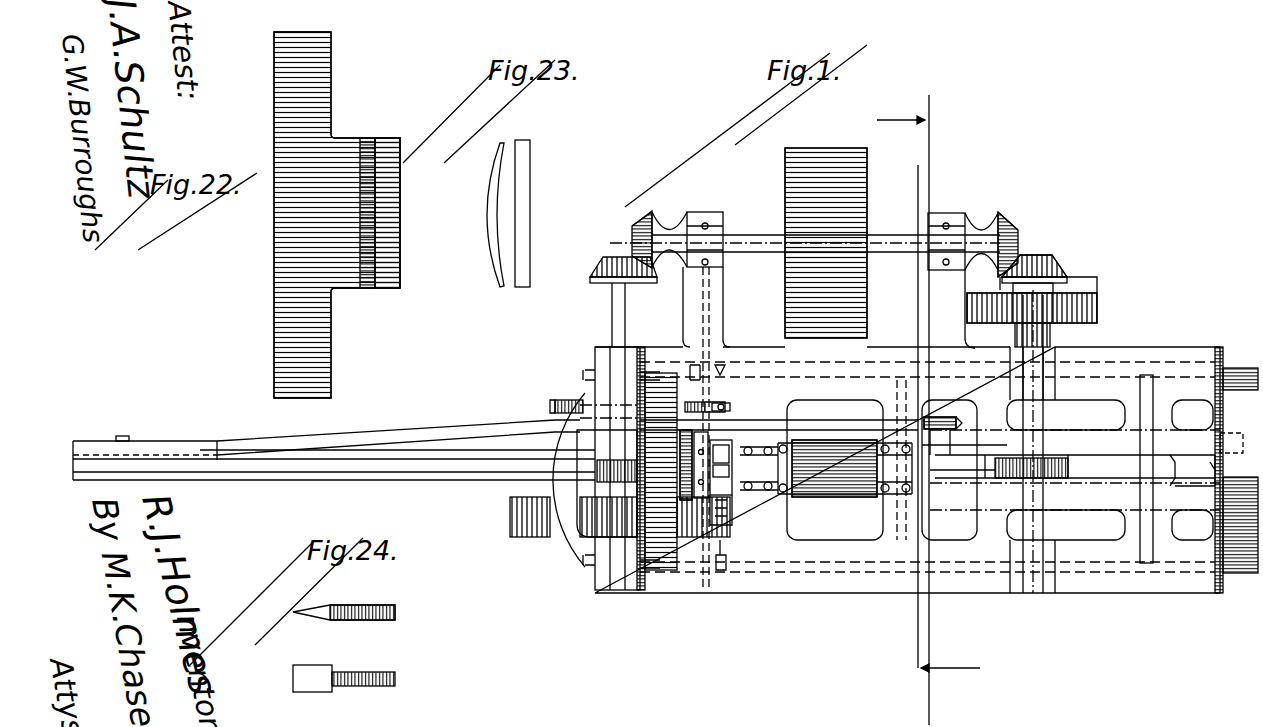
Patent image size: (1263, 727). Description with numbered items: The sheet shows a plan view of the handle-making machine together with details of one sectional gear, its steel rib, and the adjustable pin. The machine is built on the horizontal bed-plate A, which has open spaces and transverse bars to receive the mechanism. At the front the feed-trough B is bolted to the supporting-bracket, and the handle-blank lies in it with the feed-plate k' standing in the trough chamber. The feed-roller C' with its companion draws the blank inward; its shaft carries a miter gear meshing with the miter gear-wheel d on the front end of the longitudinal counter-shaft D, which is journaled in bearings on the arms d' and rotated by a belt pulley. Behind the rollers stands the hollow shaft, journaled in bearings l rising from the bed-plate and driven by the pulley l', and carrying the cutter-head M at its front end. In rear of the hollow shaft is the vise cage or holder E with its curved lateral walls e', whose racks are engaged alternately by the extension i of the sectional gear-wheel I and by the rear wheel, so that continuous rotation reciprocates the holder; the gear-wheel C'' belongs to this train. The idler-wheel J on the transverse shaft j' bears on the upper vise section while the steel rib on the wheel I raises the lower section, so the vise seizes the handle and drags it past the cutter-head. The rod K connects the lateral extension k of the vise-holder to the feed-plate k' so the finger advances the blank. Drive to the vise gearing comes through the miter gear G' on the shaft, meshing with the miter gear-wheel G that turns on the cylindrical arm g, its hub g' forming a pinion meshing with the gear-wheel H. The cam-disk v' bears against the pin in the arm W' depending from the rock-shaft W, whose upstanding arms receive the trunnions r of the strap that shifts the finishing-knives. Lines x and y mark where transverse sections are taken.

In FIG. 1, the bed-plate A is at (833, 590).
In FIG. 1, the feed-trough B is at (445, 478).
In FIG. 1, the feed-roller C' is at (621, 468).
In FIG. 1, the gear wheel C'' is at (634, 468).
In FIG. 1, the counter-shaft D is at (765, 235).
In FIG. 1, the miter gear-wheel d is at (646, 239).
In FIG. 1, the arm d' is at (718, 428).
In FIG. 1, the vise cage or holder E is at (950, 460).
In FIG. 1, the curved lateral wall e' is at (962, 485).
In FIG. 1, the miter gear-wheel G is at (1038, 254).
In FIG. 1, the miter-gear G' is at (992, 264).
In FIG. 1, the cylindrical arm g is at (1042, 297).
In FIG. 1, the hub g' is at (1075, 322).
In FIG. 1, the gear-wheel H is at (1165, 292).
In FIG. 22, the gear-wheel I is at (262, 110).
In FIG. 22, the extension i is at (400, 160).
In FIG. 1, the idler-wheel J is at (1070, 468).
In FIG. 1, the transverse shaft j' is at (1010, 453).
In FIG. 1, the rod K is at (433, 434).
In FIG. 1, the lateral extension k is at (943, 407).
In FIG. 1, the feed-plate k' is at (128, 426).
In FIG. 1, the bearing l is at (826, 468).
In FIG. 1, the pulley l' is at (834, 483).
In FIG. 1, the cutter-head M is at (738, 518).
In FIG. 1, the trunnion r is at (703, 465).
In FIG. 1, the cam-disk v' is at (559, 393).
In FIG. 24, the rock-shaft W is at (360, 648).
In FIG. 1, the rock-shaft W is at (705, 467).
In FIG. 1, the arm W' is at (735, 396).
In FIG. 1, the section line x is at (938, 421).
In FIG. 1, the section line y is at (914, 409).